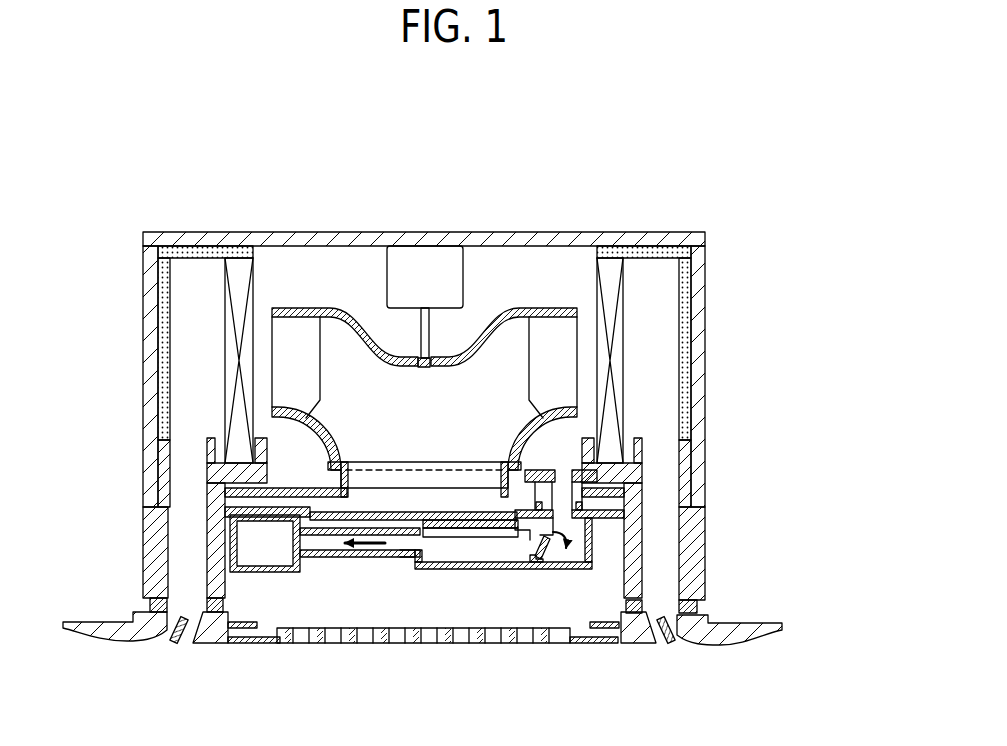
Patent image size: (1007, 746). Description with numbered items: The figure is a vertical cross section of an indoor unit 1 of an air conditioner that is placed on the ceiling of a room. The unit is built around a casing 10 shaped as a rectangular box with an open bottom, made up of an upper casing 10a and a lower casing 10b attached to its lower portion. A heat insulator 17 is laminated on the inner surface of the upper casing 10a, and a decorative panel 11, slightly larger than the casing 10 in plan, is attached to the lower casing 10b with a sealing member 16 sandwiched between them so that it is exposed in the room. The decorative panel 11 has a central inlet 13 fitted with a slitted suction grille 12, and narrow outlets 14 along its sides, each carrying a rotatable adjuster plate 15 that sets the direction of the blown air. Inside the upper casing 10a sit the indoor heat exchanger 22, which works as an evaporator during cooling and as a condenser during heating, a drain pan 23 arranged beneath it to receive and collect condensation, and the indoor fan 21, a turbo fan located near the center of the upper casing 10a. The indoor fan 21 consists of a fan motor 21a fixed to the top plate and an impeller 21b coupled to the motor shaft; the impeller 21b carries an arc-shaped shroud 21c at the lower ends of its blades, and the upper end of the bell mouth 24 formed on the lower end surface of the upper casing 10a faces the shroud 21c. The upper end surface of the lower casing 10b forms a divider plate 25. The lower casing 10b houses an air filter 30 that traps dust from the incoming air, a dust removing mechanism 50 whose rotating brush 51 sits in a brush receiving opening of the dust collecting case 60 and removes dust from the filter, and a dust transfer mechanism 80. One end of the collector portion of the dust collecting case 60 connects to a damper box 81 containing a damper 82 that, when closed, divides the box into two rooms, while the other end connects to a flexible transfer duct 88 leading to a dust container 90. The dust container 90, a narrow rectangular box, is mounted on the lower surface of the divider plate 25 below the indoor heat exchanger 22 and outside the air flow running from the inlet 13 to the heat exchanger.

The indoor unit 1 is at (661, 199).
The casing 10 is at (812, 360).
The upper casing 10a is at (705, 370).
The lower casing 10b is at (704, 526).
The decorative panel 11 is at (108, 643).
The suction grille 12 is at (310, 646).
The inlet 13 is at (541, 646).
The outlet 14 is at (166, 633).
The adjuster plate 15 is at (178, 646).
The sealing member 16 is at (697, 606).
The heat insulator 17 is at (165, 246).
The indoor fan 21 is at (395, 163).
The fan motor 21a is at (393, 264).
The impeller 21b is at (300, 307).
The shroud 21c is at (333, 450).
The indoor heat exchanger 22 is at (240, 272).
The drain pan 23 is at (212, 437).
The bell mouth 24 is at (452, 462).
The divider plate 25 is at (288, 507).
The air filter 30 is at (378, 510).
The dust removing mechanism 50 is at (430, 519).
The rotating brush 51 is at (445, 538).
The dust collecting case 60 is at (491, 571).
The dust transfer mechanism 80 is at (598, 538).
The damper box 81 is at (576, 569).
The damper 82 is at (542, 561).
The transfer duct 88 is at (334, 558).
The dust container 90 is at (259, 573).